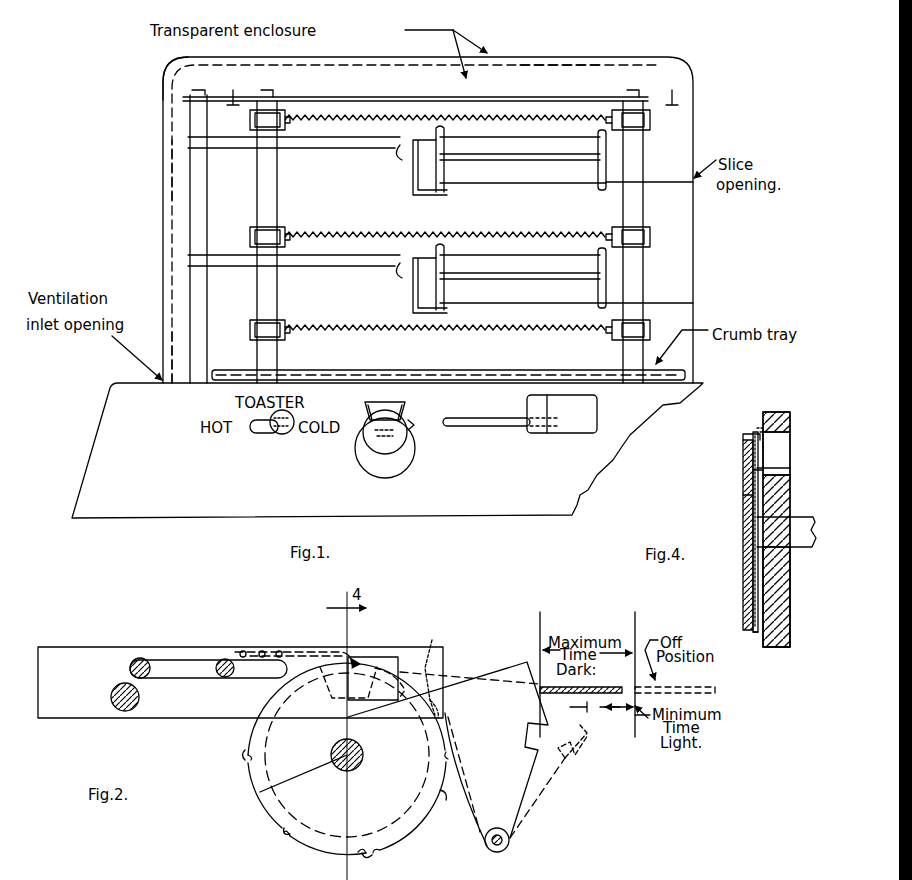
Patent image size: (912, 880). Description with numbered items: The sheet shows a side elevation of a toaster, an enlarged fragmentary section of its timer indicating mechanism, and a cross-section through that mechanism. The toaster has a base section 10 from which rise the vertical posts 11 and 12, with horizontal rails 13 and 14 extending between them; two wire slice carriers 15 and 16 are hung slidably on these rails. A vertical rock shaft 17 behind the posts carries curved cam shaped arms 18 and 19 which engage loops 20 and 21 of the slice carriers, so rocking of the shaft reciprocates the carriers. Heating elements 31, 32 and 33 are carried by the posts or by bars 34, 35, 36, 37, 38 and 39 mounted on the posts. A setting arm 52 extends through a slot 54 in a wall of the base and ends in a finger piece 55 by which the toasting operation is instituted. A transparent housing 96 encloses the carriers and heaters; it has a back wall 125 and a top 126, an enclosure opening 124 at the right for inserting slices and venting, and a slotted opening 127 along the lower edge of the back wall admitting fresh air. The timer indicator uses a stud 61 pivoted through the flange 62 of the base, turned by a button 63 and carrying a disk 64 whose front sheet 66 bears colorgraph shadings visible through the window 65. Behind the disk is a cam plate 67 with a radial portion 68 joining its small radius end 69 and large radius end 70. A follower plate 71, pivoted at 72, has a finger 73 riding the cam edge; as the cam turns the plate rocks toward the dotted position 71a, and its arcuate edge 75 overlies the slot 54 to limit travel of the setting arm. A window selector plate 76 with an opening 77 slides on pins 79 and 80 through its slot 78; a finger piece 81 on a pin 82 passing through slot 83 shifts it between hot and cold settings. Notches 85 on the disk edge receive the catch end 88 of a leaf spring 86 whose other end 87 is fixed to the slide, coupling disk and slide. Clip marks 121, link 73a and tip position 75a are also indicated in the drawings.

In FIG. 1, the base section 10 is at (387, 450).
In FIG. 4, the base section 10 is at (792, 630).
In FIG. 1, the vertical post 11 is at (262, 176).
In FIG. 1, the vertical post 12 is at (636, 161).
In FIG. 1, the horizontal rail 13 is at (552, 254).
In FIG. 1, the horizontal rail 14 is at (547, 135).
In FIG. 1, the slice carrier 15 is at (522, 310).
In FIG. 1, the slice carrier 16 is at (494, 185).
In FIG. 1, the vertical rock shaft 17 is at (200, 240).
In FIG. 1, the cam shaped arm 18 is at (320, 268).
In FIG. 1, the cam shaped arm 19 is at (312, 150).
In FIG. 1, the loop 20 is at (398, 270).
In FIG. 1, the loop 21 is at (398, 152).
In FIG. 1, the heating element 31 is at (363, 329).
In FIG. 1, the heating element 32 is at (382, 236).
In FIG. 1, the heating element 33 is at (420, 117).
In FIG. 1, the bar 34 is at (652, 324).
In FIG. 1, the bar 35 is at (652, 233).
In FIG. 1, the bar 36 is at (652, 118).
In FIG. 1, the bar 37 is at (250, 325).
In FIG. 1, the bar 38 is at (250, 231).
In FIG. 1, the bar 39 is at (250, 120).
In FIG. 2, the setting arm 52 is at (578, 693).
In FIG. 1, the slot 54 is at (490, 423).
In FIG. 1, the finger piece 55 is at (567, 424).
In FIG. 4, the rock shaft or stud 61 is at (800, 525).
In FIG. 2, the rock shaft or stud 61 is at (258, 791).
In FIG. 1, the flange 62 is at (420, 476).
In FIG. 4, the flange 62 is at (778, 580).
In FIG. 1, the finger piece or button 63 is at (371, 454).
In FIG. 4, the disk 64 is at (752, 622).
In FIG. 2, the disk 64 is at (294, 795).
In FIG. 1, the window or escutcheon opening 65 is at (400, 407).
In FIG. 4, the window or escutcheon opening 65 is at (777, 460).
In FIG. 2, the window or escutcheon opening 65 is at (396, 664).
In FIG. 4, the sheet or layer 66 is at (756, 633).
In FIG. 4, the cam plate 67 is at (743, 600).
In FIG. 4, the radial portion 68 is at (753, 470).
In FIG. 4, the small radius end 69 is at (745, 497).
In FIG. 4, the large radius end 70 is at (743, 432).
In FIG. 2, the follower plate 71 is at (505, 795).
In FIG. 2, the follower plate dotted line position 71a is at (563, 775).
In FIG. 2, the pivotal point 72 is at (510, 840).
In FIG. 2, the finger 73 is at (361, 755).
In FIG. 2, the hub link 73a is at (439, 667).
In FIG. 2, the curved or arcuate edge portion 75 is at (527, 662).
In FIG. 2, the lever tip alternate 75a is at (590, 750).
In FIG. 4, the window selector plate 76 is at (760, 427).
In FIG. 2, the window selector plate 76 is at (92, 655).
In FIG. 4, the opening 77 is at (790, 470).
In FIG. 2, the opening 77 is at (396, 658).
In FIG. 2, the slot 78 is at (180, 660).
In FIG. 2, the pin 79 is at (140, 657).
In FIG. 2, the pin 80 is at (225, 658).
In FIG. 1, the finger piece 81 is at (294, 420).
In FIG. 2, the pin 82 is at (122, 712).
In FIG. 1, the slot 83 is at (253, 433).
In FIG. 2, the notch 85 is at (245, 755).
In FIG. 2, the leaf spring element 86 is at (298, 650).
In FIG. 2, the end 87 is at (236, 650).
In FIG. 2, the end 88 is at (371, 655).
In FIG. 1, the housing 96 is at (160, 89).
In FIG. 1, the enclosure clip 121 is at (446, 91).
In FIG. 1, the enclosure opening 124 is at (690, 62).
In FIG. 1, the back wall 125 is at (172, 159).
In FIG. 1, the top 126 is at (542, 63).
In FIG. 1, the slotted opening 127 is at (172, 343).